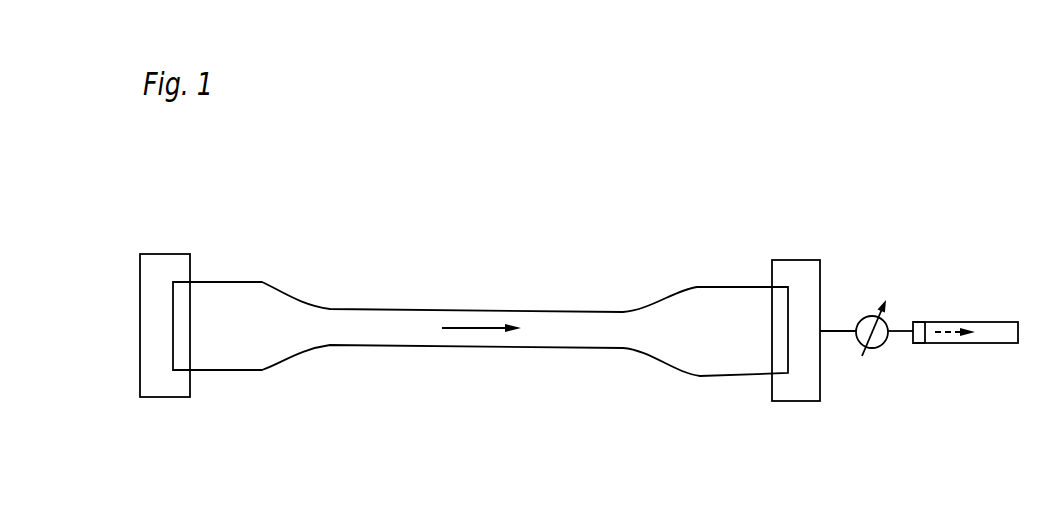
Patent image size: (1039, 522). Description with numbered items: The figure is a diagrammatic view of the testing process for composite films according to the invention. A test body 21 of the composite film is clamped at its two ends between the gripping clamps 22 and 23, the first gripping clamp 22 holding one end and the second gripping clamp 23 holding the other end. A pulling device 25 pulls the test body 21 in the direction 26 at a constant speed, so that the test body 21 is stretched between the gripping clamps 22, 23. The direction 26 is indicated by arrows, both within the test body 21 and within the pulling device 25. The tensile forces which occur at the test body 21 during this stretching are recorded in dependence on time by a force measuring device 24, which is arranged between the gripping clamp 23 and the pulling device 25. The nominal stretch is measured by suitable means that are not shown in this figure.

The test body 21 is at (245, 305).
The gripping clamp 22 is at (163, 270).
The gripping clamp 23 is at (805, 277).
The force measuring device 24 is at (869, 318).
The pulling device 25 is at (980, 322).
The pulling direction 26 is at (481, 330).